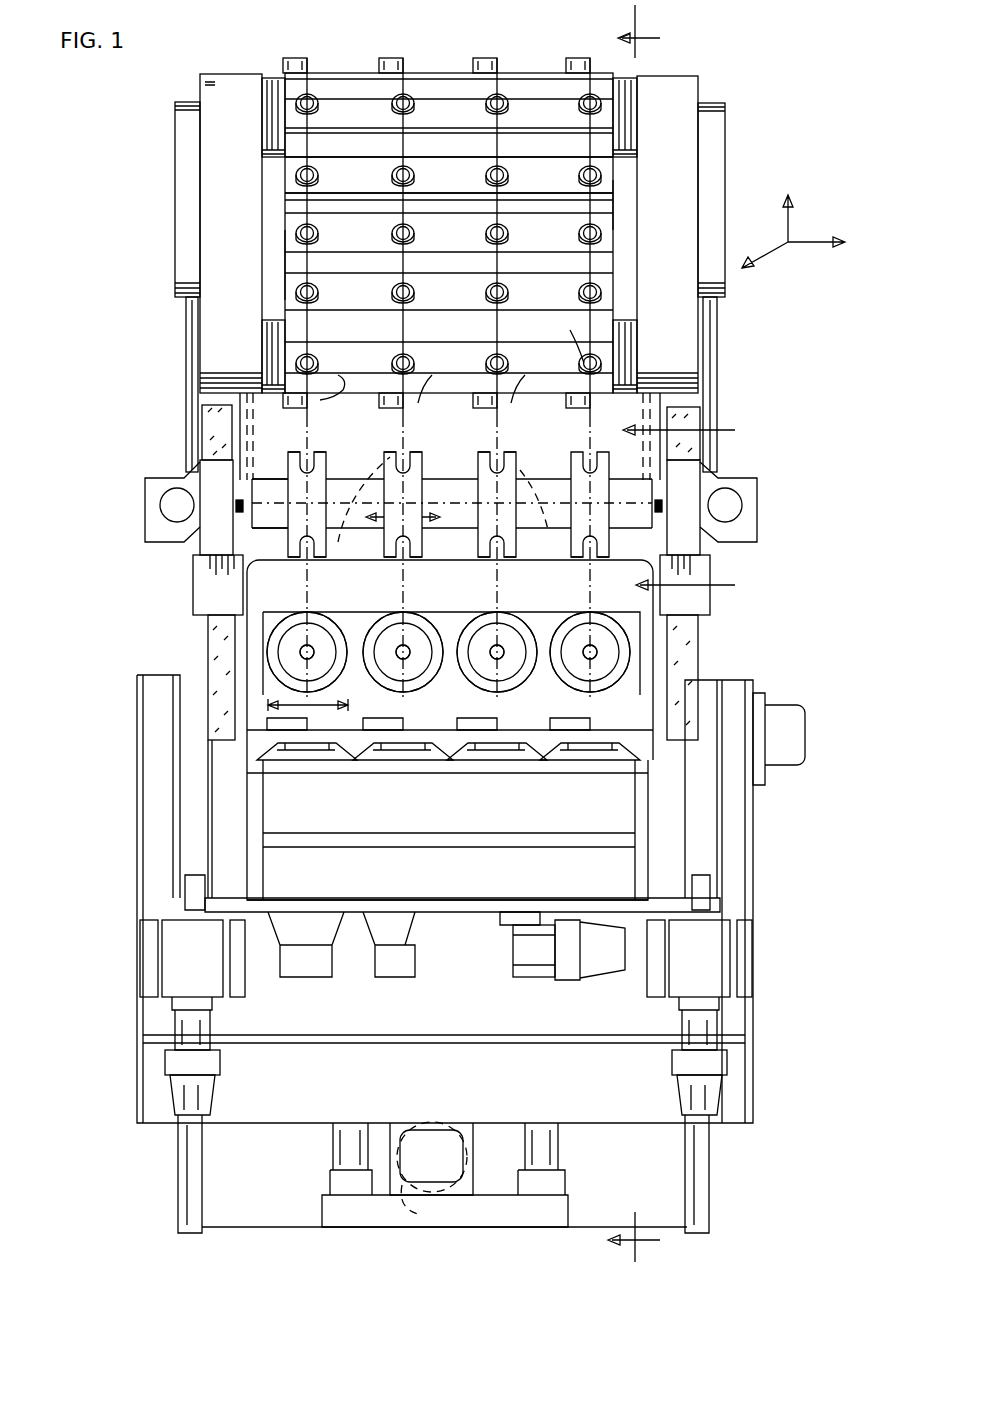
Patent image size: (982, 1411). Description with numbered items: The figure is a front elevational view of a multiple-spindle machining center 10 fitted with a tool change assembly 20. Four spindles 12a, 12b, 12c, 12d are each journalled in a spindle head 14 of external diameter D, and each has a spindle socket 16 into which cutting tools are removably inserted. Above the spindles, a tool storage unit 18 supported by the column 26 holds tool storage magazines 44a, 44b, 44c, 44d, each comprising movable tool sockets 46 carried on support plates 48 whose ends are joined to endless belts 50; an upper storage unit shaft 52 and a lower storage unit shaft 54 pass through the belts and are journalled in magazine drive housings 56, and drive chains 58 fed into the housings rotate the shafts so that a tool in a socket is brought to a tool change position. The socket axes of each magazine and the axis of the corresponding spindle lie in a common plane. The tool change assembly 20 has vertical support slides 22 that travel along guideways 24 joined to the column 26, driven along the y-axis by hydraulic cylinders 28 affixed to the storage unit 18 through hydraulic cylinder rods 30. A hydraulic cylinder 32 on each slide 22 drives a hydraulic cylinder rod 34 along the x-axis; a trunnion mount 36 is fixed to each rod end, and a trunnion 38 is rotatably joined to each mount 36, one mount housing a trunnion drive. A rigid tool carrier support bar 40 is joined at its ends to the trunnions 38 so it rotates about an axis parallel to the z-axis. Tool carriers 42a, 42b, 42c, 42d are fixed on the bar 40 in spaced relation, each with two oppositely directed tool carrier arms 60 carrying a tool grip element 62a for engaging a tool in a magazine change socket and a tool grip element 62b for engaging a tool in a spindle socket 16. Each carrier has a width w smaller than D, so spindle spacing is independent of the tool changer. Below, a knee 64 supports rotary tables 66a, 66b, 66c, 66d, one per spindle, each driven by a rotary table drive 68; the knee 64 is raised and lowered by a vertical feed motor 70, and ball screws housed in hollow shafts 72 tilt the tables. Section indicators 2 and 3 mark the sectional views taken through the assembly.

The machining center 10 is at (782, 626).
The spindle 12a is at (310, 625).
The spindle 12b is at (406, 625).
The spindle 12c is at (502, 625).
The spindle 12d is at (594, 625).
The spindle head 14 is at (286, 619).
The spindle socket 16 is at (300, 654).
The tool storage unit 18 is at (613, 78).
The tool change assembly 20 is at (728, 474).
The vertical support slide 22 is at (193, 589).
The guideway 24 is at (207, 646).
The column 26 is at (700, 404).
The hydraulic cylinder 28 is at (175, 175).
The hydraulic cylinder rod 30 is at (186, 356).
The hydraulic cylinder 32 is at (145, 488).
The hydraulic cylinder rod 34 is at (168, 513).
The trunnion mount 36 is at (200, 560).
The trunnion 38 is at (295, 472).
The tool carrier support bar 40 is at (566, 480).
The tool carrier 42a is at (330, 480).
The tool carrier 42b is at (424, 492).
The tool carrier 42c is at (517, 499).
The tool carrier 42d is at (613, 504).
The tool storage magazine 44a is at (324, 30).
The tool storage magazine 44b is at (420, 30).
The tool storage magazine 44c is at (514, 30).
The tool storage magazine 44d is at (607, 30).
The tool socket 46 is at (319, 107).
The support plate 48 is at (457, 170).
The endless belt 50 is at (285, 261).
The upper storage unit shaft 52 is at (274, 78).
The lower storage unit shaft 54 is at (270, 324).
The magazine drive housing 56 is at (243, 202).
The drive chain 58 is at (250, 445).
The tool carrier arm 60 is at (290, 497).
The tool grip element 62a is at (310, 452).
The tool grip element 62b is at (326, 556).
The knee 64 is at (742, 824).
The rotary table 66a is at (310, 763).
The rotary table 66b is at (406, 763).
The rotary table 66c is at (501, 763).
The rotary table 66d is at (600, 763).
The rotary table drive 68 is at (538, 962).
The vertical feed motor 70 is at (444, 1176).
The hollow shaft 72 is at (178, 1169).
The section line 2 is at (642, 633).
The section line 3 is at (685, 507).